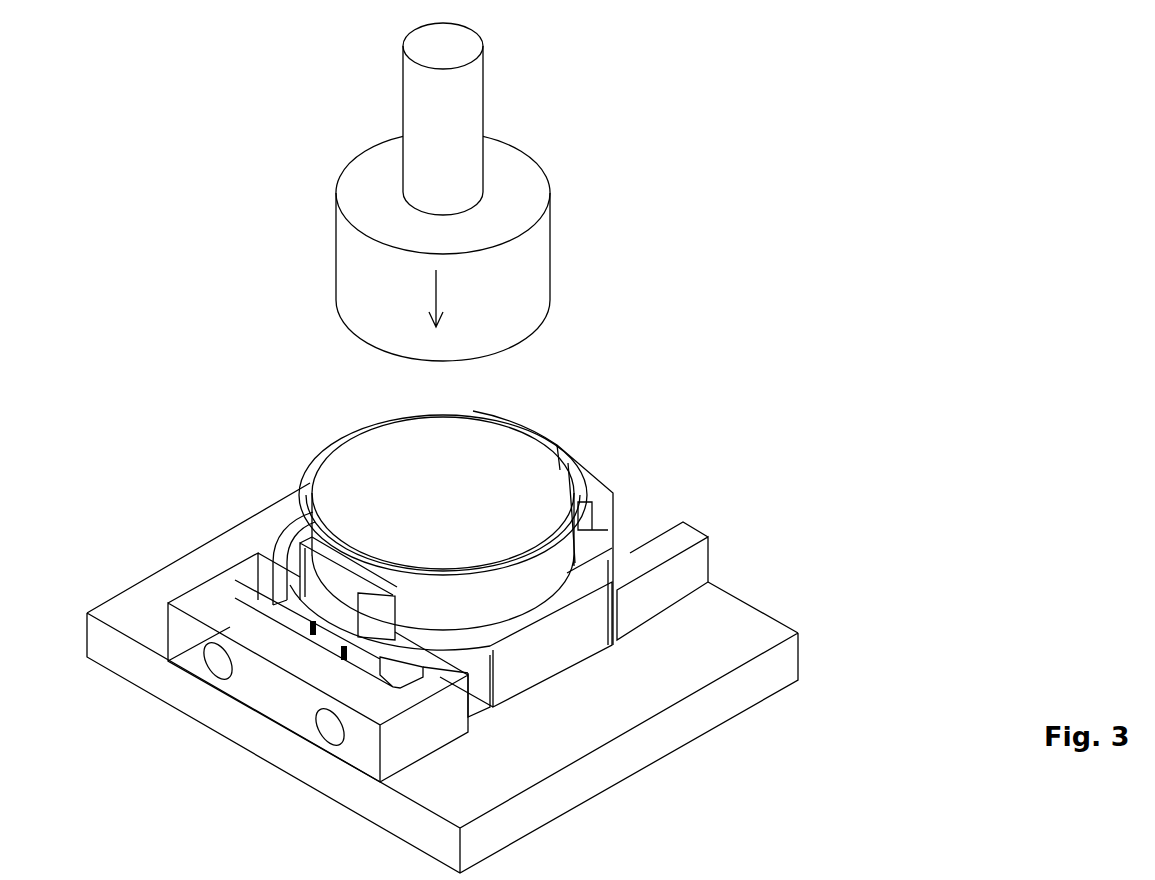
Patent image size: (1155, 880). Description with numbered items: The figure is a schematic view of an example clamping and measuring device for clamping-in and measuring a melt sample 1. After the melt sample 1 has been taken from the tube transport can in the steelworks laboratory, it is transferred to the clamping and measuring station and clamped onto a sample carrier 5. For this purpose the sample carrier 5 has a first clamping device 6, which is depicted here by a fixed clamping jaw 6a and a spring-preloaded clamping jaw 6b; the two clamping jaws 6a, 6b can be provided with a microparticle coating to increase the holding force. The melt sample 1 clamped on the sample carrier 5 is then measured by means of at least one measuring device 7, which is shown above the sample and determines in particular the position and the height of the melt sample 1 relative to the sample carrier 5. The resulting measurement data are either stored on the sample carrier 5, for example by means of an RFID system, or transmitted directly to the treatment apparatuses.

The melt sample 1 is at (358, 485).
The sample carrier 5 is at (563, 652).
The first clamping device 6 is at (572, 398).
The fixed clamping jaw 6a is at (335, 601).
The spring-preloaded clamping jaw 6b is at (592, 475).
The measuring device 7 is at (358, 297).